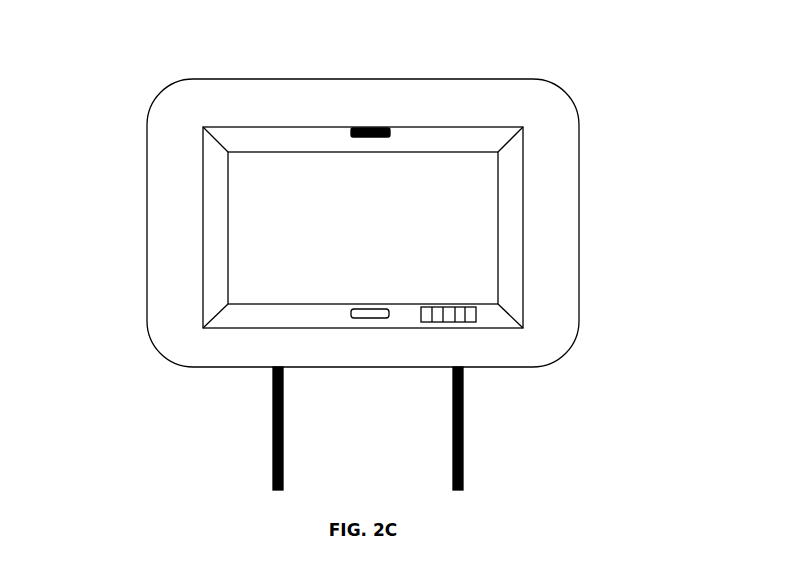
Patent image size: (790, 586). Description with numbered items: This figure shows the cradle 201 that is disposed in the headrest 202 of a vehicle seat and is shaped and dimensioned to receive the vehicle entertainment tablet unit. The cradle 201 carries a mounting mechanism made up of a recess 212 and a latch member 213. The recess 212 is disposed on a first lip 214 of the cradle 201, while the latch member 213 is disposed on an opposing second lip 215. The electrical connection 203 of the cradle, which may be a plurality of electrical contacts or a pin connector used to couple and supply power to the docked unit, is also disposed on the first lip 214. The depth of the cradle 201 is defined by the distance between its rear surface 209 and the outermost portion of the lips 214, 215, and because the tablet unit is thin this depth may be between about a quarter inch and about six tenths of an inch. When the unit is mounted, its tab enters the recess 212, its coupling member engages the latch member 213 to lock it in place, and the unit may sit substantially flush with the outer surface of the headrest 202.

The cradle 201 is at (204, 273).
The headrest 202 is at (147, 145).
The electrical connection 203 is at (458, 318).
The rear surface 209 is at (476, 245).
The recess 212 is at (363, 318).
The latch member 213 is at (378, 128).
The first lip 214 is at (262, 318).
The second lip 215 is at (477, 135).